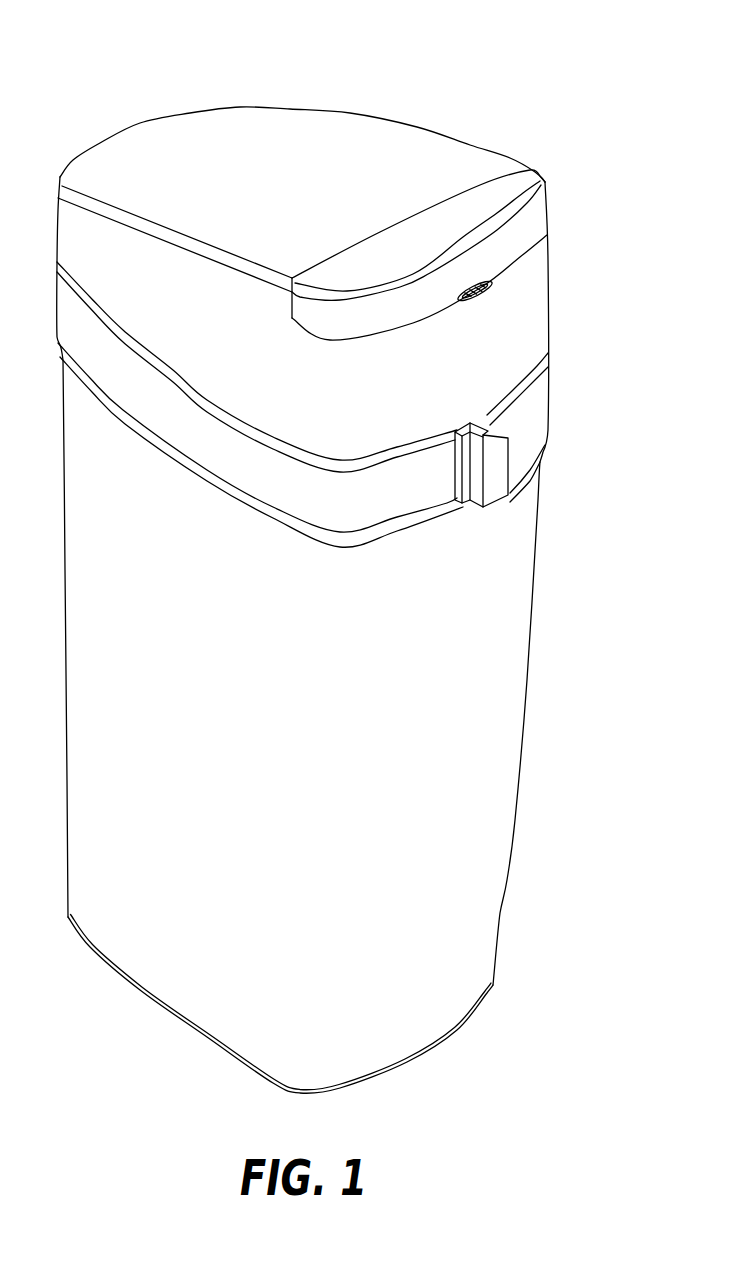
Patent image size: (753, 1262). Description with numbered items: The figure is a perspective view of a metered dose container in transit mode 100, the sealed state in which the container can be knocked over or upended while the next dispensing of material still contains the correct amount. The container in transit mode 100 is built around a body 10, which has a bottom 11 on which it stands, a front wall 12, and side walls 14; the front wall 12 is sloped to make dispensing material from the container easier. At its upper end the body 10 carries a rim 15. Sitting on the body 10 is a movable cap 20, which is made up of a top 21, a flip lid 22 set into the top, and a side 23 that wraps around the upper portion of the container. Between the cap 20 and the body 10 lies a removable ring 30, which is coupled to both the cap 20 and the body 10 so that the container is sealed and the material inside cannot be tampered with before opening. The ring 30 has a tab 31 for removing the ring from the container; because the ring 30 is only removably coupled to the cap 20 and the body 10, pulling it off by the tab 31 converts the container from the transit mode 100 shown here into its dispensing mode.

The metered dose container in transit mode 100 is at (90, 36).
The body 10 is at (571, 545).
The bottom 11 is at (390, 1077).
The front wall 12 is at (493, 667).
The side walls 14 is at (108, 703).
The rim 15 is at (497, 474).
The movable cap 20 is at (478, 112).
The top 21 is at (300, 137).
The flip lid 22 is at (493, 198).
The side 23 is at (527, 312).
The removable ring 30 is at (530, 400).
The tab 31 is at (512, 457).